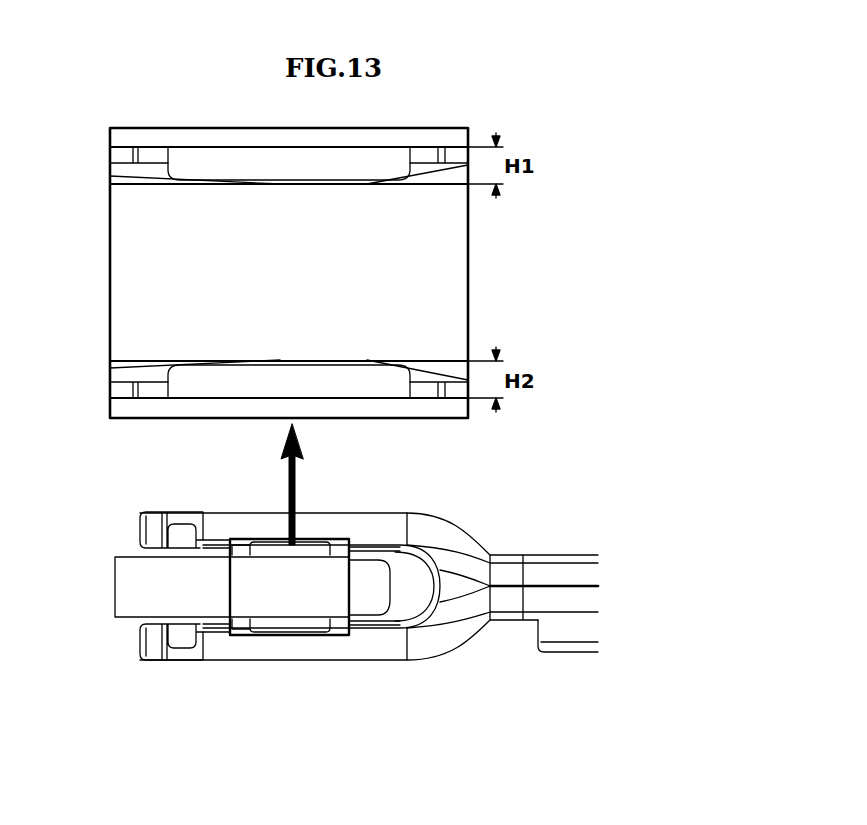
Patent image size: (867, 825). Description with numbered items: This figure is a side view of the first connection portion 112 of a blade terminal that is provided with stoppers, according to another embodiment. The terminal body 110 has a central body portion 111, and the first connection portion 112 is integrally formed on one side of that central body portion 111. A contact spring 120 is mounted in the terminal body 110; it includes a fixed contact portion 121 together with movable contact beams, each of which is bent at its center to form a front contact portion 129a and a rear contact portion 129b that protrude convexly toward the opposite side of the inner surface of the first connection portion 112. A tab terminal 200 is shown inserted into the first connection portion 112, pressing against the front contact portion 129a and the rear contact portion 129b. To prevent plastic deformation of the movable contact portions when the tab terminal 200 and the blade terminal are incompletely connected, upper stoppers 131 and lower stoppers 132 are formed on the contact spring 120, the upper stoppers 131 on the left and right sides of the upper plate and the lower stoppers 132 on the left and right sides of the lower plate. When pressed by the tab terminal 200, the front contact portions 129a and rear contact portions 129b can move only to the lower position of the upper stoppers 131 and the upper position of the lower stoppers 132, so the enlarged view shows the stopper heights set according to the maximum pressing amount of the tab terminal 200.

The terminal body 110 is at (543, 553).
The central body portion 111 is at (570, 553).
The first connection portion 112 is at (255, 518).
The contact spring 120 is at (377, 545).
The fixed contact portion 121 is at (370, 632).
The front contact portion 129a is at (221, 545).
The rear contact portion 129b is at (342, 362).
The upper stopper 131 is at (285, 168).
The lower stopper 132 is at (258, 380).
The tab terminal 200 is at (132, 570).